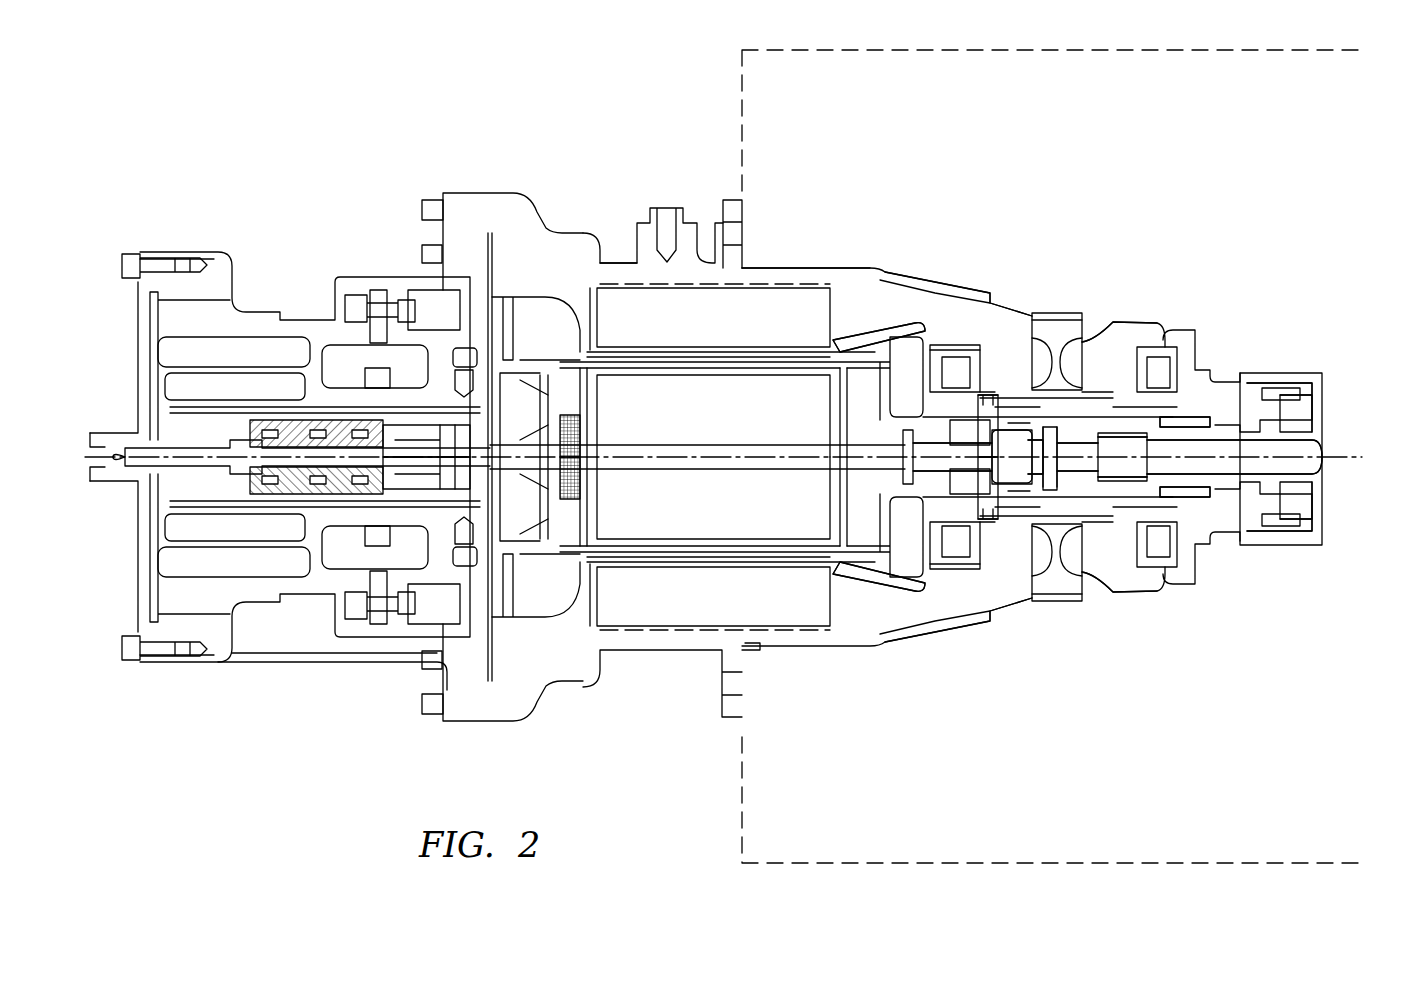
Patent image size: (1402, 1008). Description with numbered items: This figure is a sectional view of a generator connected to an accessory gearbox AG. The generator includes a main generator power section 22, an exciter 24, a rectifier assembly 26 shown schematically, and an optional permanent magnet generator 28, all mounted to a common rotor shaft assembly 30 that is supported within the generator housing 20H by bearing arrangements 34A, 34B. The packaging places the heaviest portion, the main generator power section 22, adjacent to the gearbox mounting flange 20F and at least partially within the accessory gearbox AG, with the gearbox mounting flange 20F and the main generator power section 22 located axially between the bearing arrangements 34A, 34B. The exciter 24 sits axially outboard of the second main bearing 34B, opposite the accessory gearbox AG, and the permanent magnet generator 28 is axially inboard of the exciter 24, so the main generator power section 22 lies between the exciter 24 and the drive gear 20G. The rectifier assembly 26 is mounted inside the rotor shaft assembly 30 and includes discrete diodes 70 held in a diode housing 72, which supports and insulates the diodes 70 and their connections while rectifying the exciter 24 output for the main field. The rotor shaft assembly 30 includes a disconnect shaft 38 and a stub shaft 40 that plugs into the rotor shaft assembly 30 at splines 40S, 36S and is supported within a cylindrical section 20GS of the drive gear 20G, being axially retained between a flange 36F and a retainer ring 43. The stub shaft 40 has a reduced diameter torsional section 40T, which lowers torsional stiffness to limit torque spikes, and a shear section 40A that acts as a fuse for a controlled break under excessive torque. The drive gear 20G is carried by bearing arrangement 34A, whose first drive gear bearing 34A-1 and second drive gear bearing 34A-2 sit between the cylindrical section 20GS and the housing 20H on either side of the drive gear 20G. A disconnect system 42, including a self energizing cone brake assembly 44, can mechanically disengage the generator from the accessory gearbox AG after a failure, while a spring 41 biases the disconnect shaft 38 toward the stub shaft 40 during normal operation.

The accessory gearbox AG is at (738, 95).
The generator housing 20H is at (553, 232).
The gearbox mounting flange 20F is at (732, 197).
The drive gear 20G is at (1079, 306).
The cylindrical section 20GS is at (1032, 348).
The main generator power section 22 is at (688, 600).
The exciter 24 is at (235, 392).
The rectifier assembly 26 is at (338, 500).
The permanent magnet generator 28 is at (375, 380).
The rotor shaft assembly 30 is at (502, 518).
The bearing arrangement 34A is at (1167, 306).
The first drive gear bearing 34A-1 is at (1178, 430).
The second drive gear bearing 34A-2 is at (950, 350).
The second main bearing 34B is at (460, 340).
The flange 36F is at (1014, 496).
The splines 36S is at (924, 545).
The disconnect shaft 38 is at (1180, 432).
The stub shaft 40 is at (996, 426).
The shear section 40A is at (1006, 508).
The splines 40S is at (903, 462).
The torsional section 40T is at (978, 500).
The spring 41 is at (1120, 500).
The disconnect system 42 is at (1264, 388).
The retainer ring 43 is at (1050, 506).
The cone brake assembly 44 is at (1287, 390).
The diodes 70 is at (275, 478).
The diode housing 72 is at (315, 480).